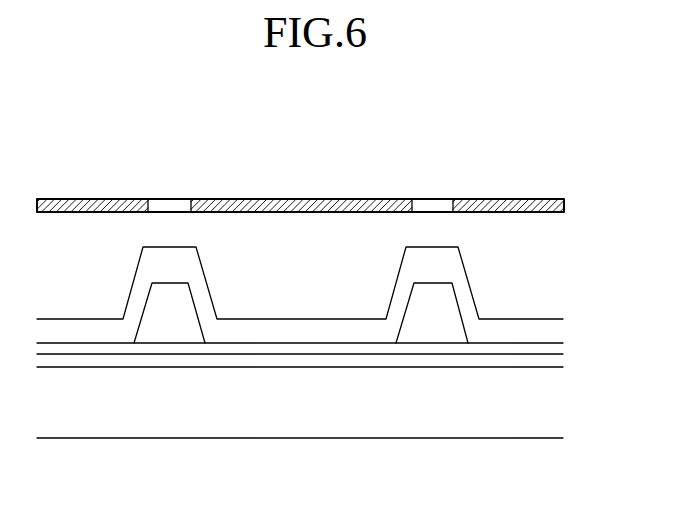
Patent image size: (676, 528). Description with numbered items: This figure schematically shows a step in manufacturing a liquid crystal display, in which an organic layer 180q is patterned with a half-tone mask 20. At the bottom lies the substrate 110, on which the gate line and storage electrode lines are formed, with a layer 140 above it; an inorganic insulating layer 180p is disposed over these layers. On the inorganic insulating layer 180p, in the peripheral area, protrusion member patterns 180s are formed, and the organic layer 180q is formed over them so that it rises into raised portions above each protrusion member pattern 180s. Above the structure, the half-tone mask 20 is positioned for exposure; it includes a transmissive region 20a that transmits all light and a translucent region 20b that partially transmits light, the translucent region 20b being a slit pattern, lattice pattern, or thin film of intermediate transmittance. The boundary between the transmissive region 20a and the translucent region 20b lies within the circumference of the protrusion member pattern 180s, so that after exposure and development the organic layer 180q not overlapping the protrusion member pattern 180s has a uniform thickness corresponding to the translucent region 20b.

The half-tone mask 20 is at (328, 177).
The transmissive region 20a is at (431, 207).
The translucent region 20b is at (312, 208).
The substrate 110 is at (435, 418).
The gate insulating layer 140 is at (505, 360).
The inorganic insulating layer 180p is at (347, 348).
The organic layer 180q is at (92, 327).
The protrusion member pattern 180s is at (168, 327).